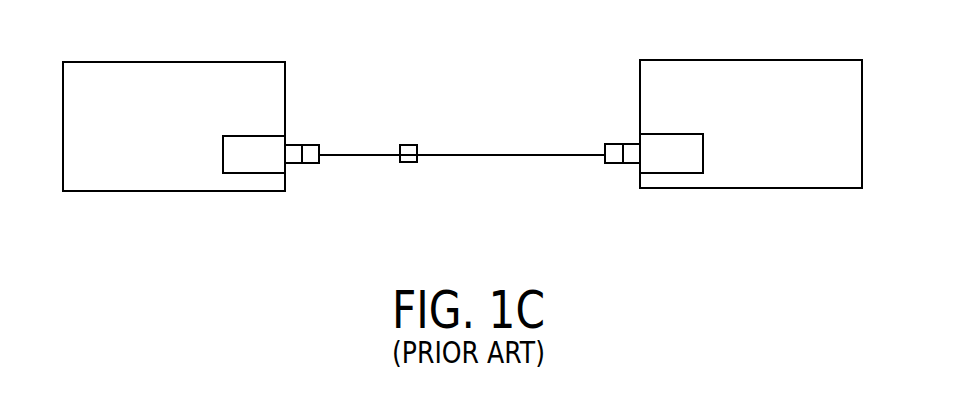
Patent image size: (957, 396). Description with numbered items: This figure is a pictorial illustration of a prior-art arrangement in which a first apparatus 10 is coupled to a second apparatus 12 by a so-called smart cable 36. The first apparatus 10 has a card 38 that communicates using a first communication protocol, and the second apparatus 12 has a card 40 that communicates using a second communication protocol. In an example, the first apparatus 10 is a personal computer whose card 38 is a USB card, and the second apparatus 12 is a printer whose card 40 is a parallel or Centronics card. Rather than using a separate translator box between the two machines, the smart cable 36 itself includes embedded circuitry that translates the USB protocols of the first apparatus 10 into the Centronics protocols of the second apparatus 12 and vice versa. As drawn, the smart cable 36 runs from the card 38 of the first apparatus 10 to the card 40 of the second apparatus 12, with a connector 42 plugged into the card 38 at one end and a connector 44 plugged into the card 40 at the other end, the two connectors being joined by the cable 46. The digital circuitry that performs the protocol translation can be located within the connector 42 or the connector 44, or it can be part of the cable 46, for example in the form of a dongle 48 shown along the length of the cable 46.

The first apparatus 10 is at (255, 67).
The second apparatus 12 is at (665, 67).
The smart cable 36 is at (463, 116).
The card 38 is at (248, 163).
The card 40 is at (675, 163).
The connector 42 is at (310, 148).
The connector 44 is at (613, 148).
The cable 46 is at (512, 157).
The dongle 48 is at (408, 163).